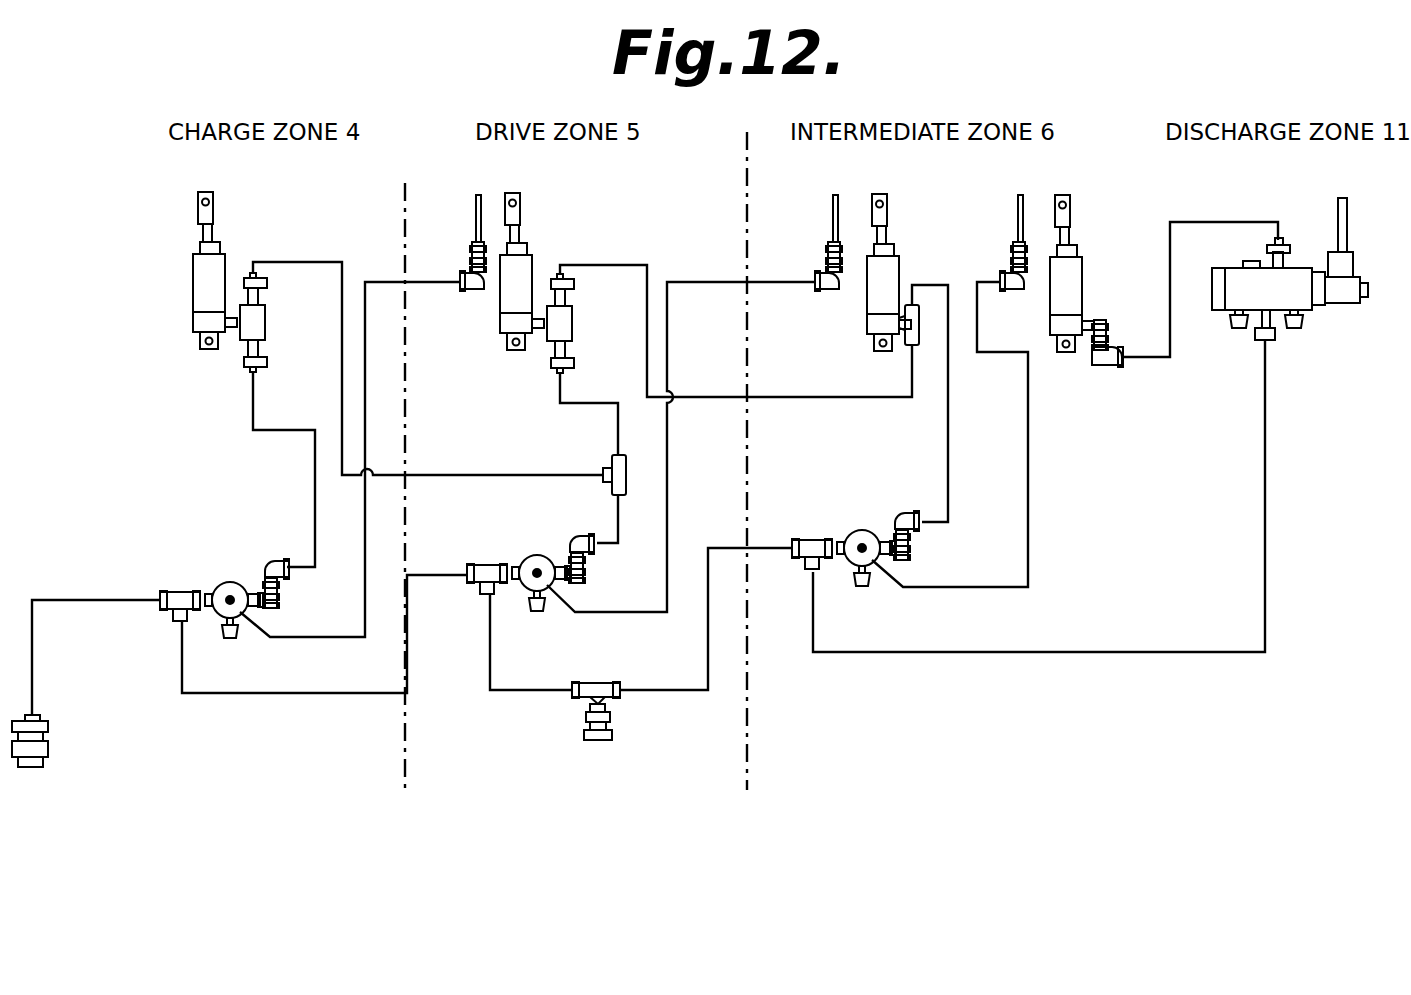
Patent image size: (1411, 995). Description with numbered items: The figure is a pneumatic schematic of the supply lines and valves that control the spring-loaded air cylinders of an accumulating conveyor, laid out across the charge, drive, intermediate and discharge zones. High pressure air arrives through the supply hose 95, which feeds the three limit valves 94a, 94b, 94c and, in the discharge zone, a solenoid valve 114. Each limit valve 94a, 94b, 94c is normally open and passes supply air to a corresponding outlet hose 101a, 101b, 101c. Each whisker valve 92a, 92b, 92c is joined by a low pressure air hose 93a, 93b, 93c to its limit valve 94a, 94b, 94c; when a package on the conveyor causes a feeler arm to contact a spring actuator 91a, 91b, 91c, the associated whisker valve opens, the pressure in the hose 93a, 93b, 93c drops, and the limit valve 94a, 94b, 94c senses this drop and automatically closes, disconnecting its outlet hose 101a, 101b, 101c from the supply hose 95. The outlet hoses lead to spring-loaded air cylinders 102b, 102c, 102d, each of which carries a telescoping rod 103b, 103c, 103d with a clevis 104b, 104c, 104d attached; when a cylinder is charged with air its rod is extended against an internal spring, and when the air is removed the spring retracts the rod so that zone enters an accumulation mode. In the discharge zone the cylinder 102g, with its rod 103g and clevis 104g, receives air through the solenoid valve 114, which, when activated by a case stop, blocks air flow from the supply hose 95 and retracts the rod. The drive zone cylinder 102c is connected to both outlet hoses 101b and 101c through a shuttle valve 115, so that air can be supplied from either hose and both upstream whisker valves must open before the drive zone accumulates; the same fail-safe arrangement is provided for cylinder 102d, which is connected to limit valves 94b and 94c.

The spring actuator 91a is at (1018, 212).
The spring actuator 91b is at (833, 212).
The spring actuator 91c is at (476, 213).
The whisker valve 92a is at (1013, 254).
The whisker valve 92b is at (828, 250).
The whisker valve 92c is at (472, 252).
The low pressure air hose 93a is at (1028, 470).
The low pressure air hose 93b is at (667, 500).
The low pressure air hose 93c is at (365, 590).
The limit valve 94a is at (858, 530).
The limit valve 94b is at (535, 555).
The limit valve 94c is at (240, 558).
The supply hose 95 is at (118, 598).
The outlet hose 101a is at (948, 435).
The outlet hose 101b is at (630, 542).
The outlet hose 101c is at (315, 508).
The spring-loaded air cylinder 102b is at (870, 300).
The spring-loaded air cylinder 102c is at (500, 302).
The spring-loaded air cylinder 102d is at (196, 278).
The spring-loaded air cylinder 102g is at (1075, 290).
The telescoping rod 103b is at (890, 240).
The telescoping rod 103c is at (524, 246).
The telescoping rod 103d is at (216, 236).
The telescoping rod 103g is at (1075, 240).
The clevis 104b is at (900, 188).
The clevis 104c is at (522, 214).
The clevis 104d is at (214, 216).
The clevis 104g is at (1075, 216).
The solenoid valve 114 is at (1275, 304).
The shuttle valve 115 is at (572, 320).